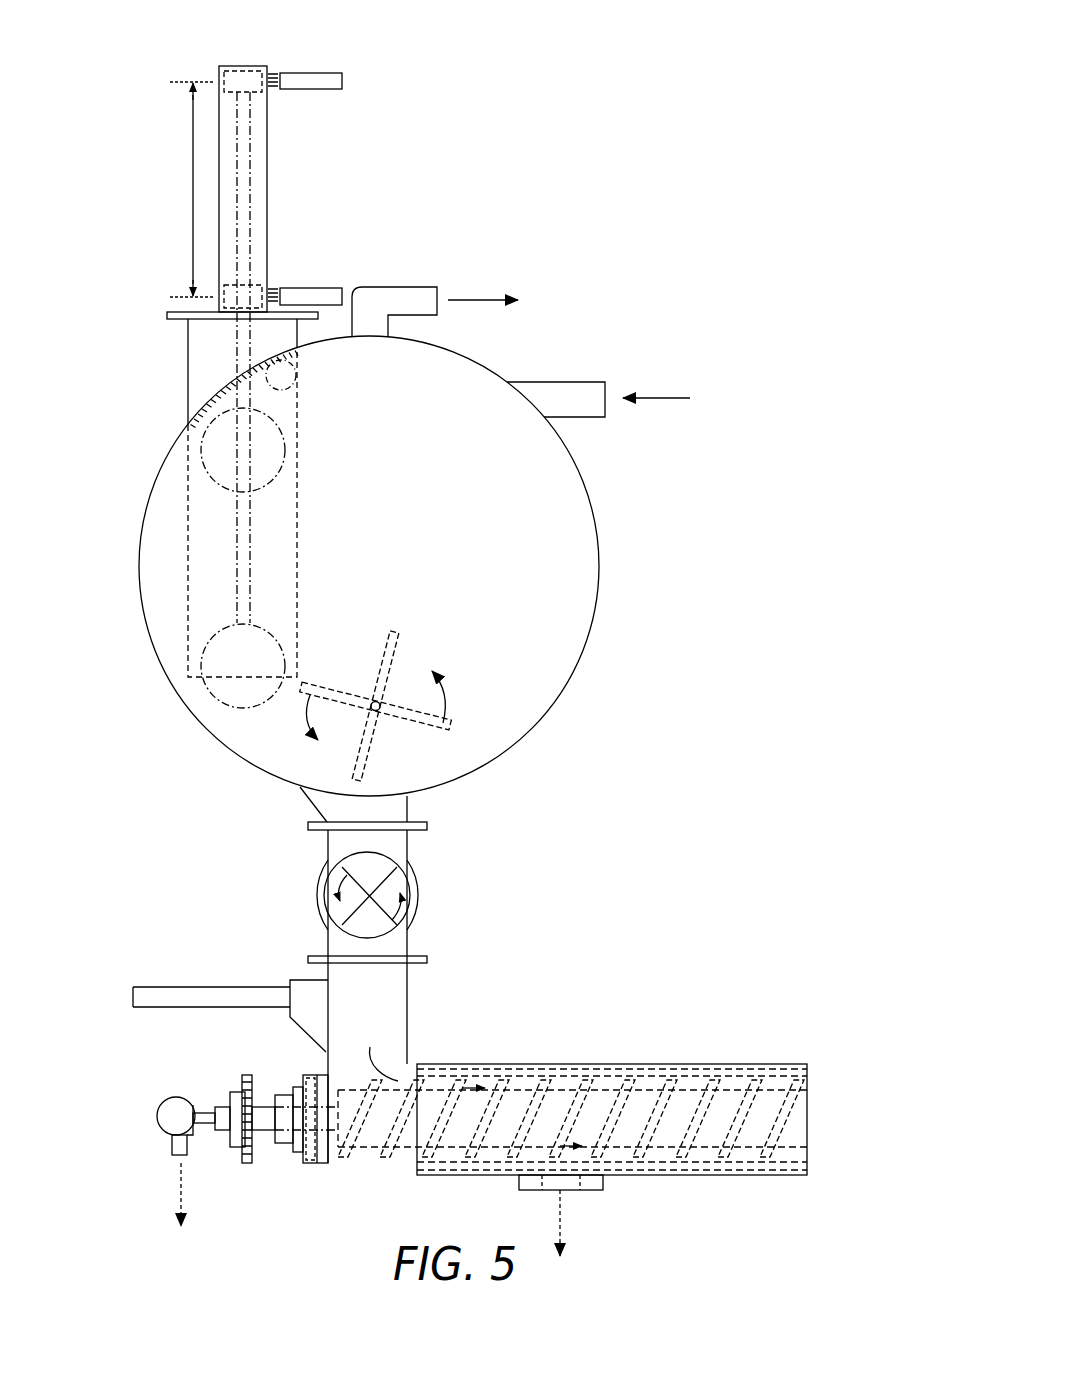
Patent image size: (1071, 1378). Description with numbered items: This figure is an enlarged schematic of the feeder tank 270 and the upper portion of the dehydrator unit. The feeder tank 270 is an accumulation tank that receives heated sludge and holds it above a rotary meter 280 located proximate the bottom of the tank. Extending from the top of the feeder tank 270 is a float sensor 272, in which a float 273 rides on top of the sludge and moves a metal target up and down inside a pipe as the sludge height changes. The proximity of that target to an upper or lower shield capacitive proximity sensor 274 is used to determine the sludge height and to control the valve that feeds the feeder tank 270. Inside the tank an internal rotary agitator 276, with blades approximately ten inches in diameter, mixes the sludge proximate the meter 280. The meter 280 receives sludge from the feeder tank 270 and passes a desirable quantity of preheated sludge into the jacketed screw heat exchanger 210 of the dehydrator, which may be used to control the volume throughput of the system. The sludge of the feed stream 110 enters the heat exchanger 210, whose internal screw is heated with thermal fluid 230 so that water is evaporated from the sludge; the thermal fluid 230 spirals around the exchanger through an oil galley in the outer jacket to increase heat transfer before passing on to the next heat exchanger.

The feed stream or sludge 110 is at (401, 1081).
The jacketed screw heat exchanger 210 is at (579, 1046).
The thermal fluid 230 is at (182, 1207).
The feeder tank 270 is at (632, 526).
The float sensor 272 is at (122, 164).
The float 273 is at (216, 488).
The shield capacitive proximity sensor 274 is at (310, 89).
The rotary agitator 276 is at (420, 723).
The rotary meter 280 is at (437, 888).